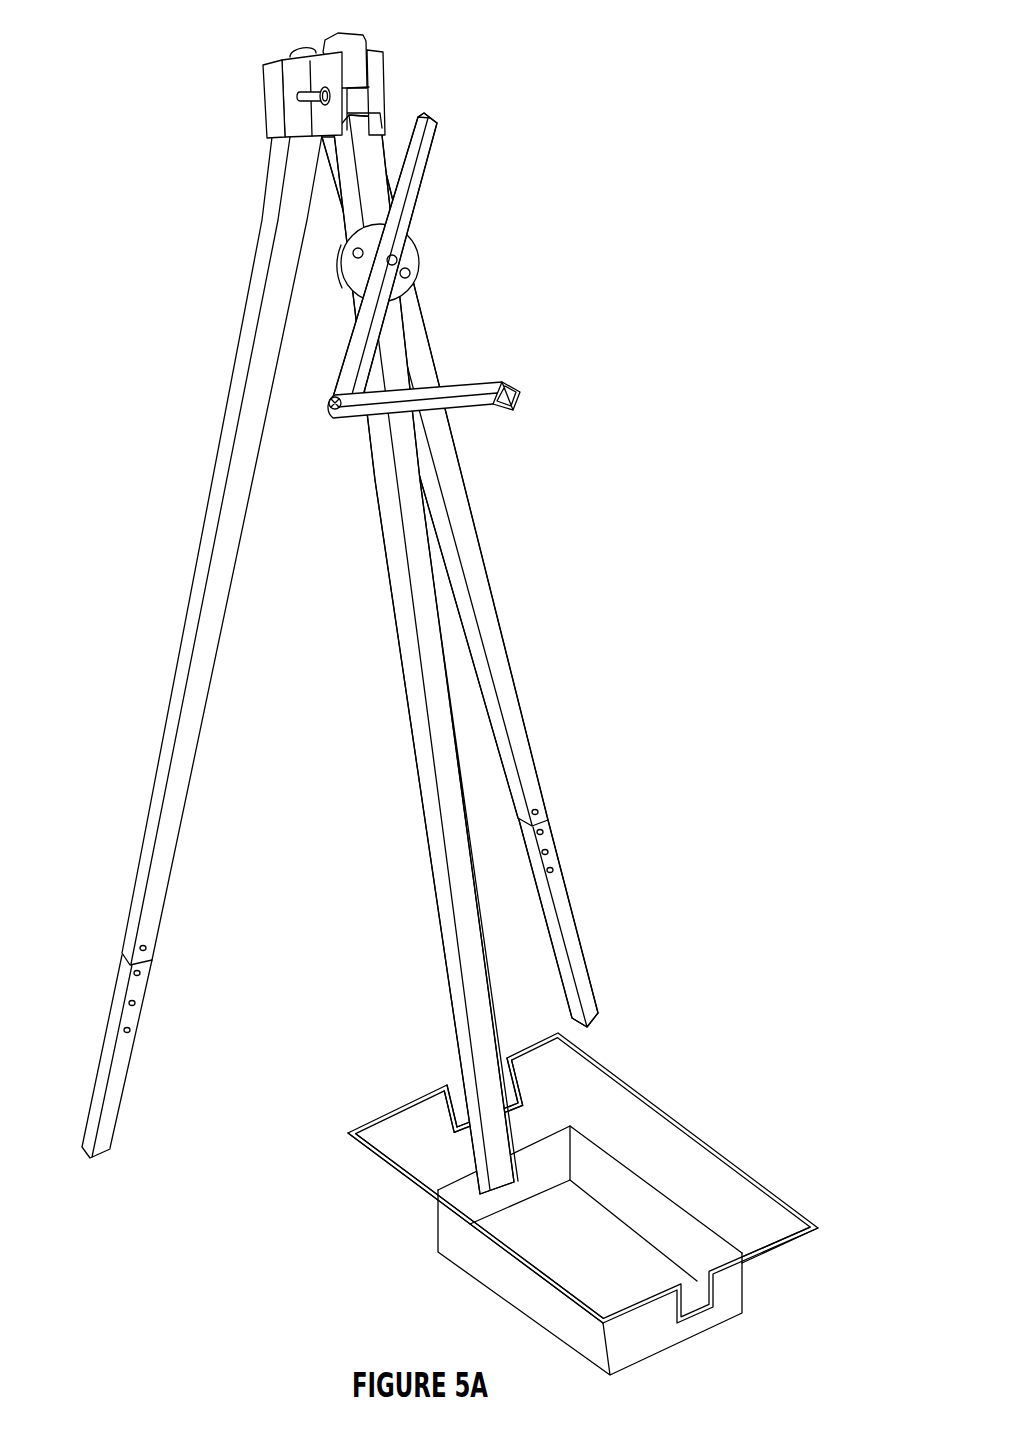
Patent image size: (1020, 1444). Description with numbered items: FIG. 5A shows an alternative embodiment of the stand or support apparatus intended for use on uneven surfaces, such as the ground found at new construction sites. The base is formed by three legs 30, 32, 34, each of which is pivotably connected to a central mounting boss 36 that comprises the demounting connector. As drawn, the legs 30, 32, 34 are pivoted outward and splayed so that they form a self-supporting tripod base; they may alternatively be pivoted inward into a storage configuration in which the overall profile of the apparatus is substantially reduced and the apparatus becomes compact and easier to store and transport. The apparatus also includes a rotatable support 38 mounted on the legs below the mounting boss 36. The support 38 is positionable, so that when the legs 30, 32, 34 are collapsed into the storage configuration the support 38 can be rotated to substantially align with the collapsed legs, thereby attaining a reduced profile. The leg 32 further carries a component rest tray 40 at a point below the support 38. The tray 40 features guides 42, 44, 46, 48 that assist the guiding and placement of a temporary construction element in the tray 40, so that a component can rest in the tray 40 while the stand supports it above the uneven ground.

The leg 30 is at (505, 700).
The leg 32 is at (437, 862).
The leg 34 is at (178, 765).
The central mounting boss 36 is at (388, 68).
The rotatable support 38 is at (417, 257).
The component rest tray 40 is at (551, 1204).
The guide 42 is at (708, 1187).
The guide 44 is at (768, 1258).
The guide 46 is at (412, 1178).
The guide 48 is at (403, 1107).